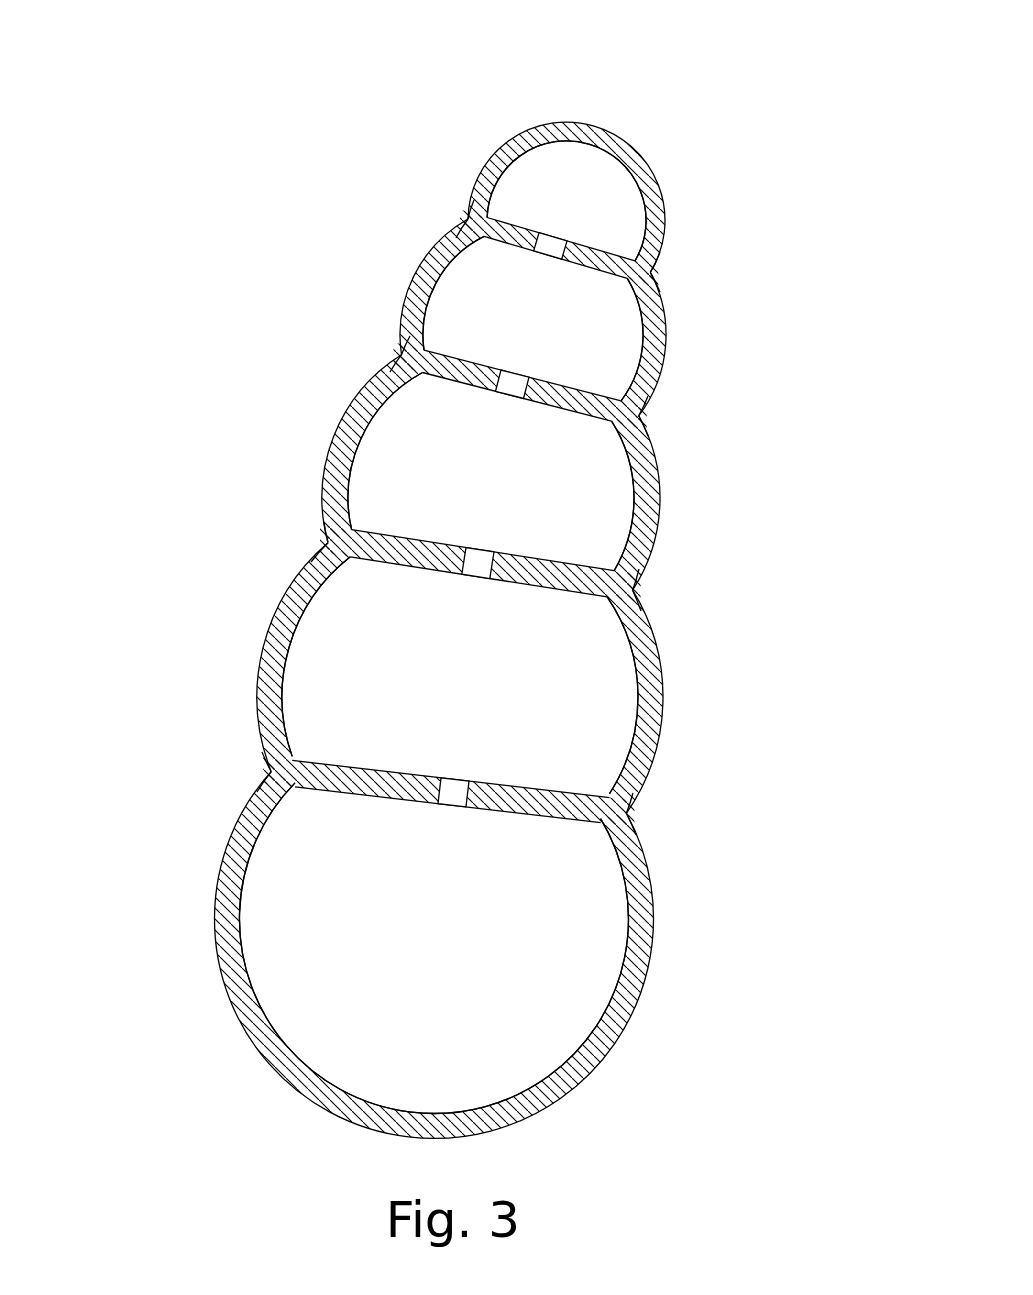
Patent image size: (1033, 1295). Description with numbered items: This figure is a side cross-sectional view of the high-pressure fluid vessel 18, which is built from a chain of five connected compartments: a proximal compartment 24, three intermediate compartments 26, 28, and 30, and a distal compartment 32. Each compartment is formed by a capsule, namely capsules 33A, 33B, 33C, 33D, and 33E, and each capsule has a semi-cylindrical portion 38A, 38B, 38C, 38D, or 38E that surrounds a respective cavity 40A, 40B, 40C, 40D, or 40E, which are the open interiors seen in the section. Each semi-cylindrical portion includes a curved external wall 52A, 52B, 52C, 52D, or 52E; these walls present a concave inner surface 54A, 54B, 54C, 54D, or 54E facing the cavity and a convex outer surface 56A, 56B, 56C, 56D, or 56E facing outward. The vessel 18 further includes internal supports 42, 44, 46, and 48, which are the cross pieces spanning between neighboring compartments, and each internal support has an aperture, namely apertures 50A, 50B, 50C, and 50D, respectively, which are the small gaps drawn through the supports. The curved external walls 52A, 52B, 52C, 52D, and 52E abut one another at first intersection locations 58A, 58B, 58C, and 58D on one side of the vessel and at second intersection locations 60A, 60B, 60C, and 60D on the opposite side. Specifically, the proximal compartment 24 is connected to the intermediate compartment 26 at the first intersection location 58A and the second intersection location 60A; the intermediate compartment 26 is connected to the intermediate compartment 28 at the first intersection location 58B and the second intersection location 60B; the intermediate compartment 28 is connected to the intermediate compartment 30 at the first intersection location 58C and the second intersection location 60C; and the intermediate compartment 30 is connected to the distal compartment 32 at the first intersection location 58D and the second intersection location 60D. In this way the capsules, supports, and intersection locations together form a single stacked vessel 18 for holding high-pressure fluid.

The high-pressure fluid vessel 18 is at (156, 97).
The proximal compartment 24 is at (679, 919).
The intermediate compartment 26 is at (682, 714).
The intermediate compartment 28 is at (680, 531).
The intermediate compartment 30 is at (678, 323).
The distal compartment 32 is at (687, 203).
The capsule 33A is at (600, 1063).
The capsule 33B is at (661, 660).
The capsule 33C is at (662, 500).
The capsule 33D is at (665, 358).
The capsule 33E is at (666, 200).
The semi-cylindrical portion 38A is at (626, 989).
The semi-cylindrical portion 38B is at (645, 755).
The semi-cylindrical portion 38C is at (648, 471).
The semi-cylindrical portion 38D is at (650, 302).
The semi-cylindrical portion 38E is at (650, 184).
The cavity 40A is at (405, 957).
The cavity 40B is at (439, 705).
The cavity 40C is at (467, 487).
The cavity 40D is at (510, 345).
The cavity 40E is at (537, 203).
The internal support 42 is at (332, 766).
The internal support 44 is at (388, 534).
The internal support 46 is at (456, 362).
The internal support 48 is at (474, 228).
The aperture 50A is at (447, 797).
The aperture 50B is at (476, 560).
The aperture 50C is at (508, 388).
The aperture 50D is at (548, 245).
The curved external wall 52A is at (234, 987).
The curved external wall 52B is at (288, 610).
The curved external wall 52C is at (402, 396).
The curved external wall 52D is at (438, 244).
The curved external wall 52E is at (498, 150).
The concave inner surface 54A is at (248, 930).
The concave inner surface 54B is at (318, 607).
The concave inner surface 54C is at (398, 409).
The concave inner surface 54D is at (472, 256).
The concave inner surface 54E is at (547, 158).
The convex outer surface 56A is at (212, 940).
The convex outer surface 56B is at (254, 704).
The convex outer surface 56C is at (345, 406).
The convex outer surface 56D is at (406, 271).
The convex outer surface 56E is at (477, 172).
The first intersection location 58A is at (629, 815).
The first intersection location 58B is at (638, 590).
The first intersection location 58C is at (643, 418).
The first intersection location 58D is at (653, 271).
The second intersection location 60A is at (267, 766).
The second intersection location 60B is at (325, 538).
The second intersection location 60C is at (398, 355).
The second intersection location 60D is at (462, 216).